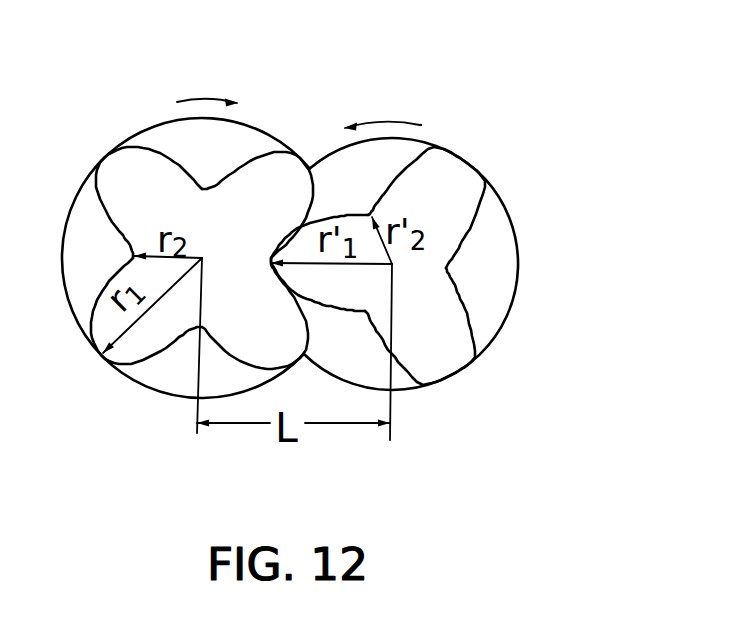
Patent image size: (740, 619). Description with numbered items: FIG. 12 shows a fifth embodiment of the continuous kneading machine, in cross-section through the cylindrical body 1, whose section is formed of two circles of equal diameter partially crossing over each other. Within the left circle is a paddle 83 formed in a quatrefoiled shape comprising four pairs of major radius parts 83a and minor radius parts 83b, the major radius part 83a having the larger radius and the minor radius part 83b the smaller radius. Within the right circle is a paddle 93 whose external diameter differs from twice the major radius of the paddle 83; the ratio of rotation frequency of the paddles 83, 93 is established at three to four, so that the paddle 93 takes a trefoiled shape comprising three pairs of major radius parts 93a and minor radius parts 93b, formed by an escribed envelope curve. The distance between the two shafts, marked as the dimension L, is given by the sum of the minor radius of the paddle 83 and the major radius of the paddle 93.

The cylindrical body 1 is at (288, 142).
The paddle 83 is at (186, 247).
The major radius part 83a is at (116, 164).
The minor radius part 83b is at (193, 318).
The paddle 93 is at (429, 234).
The major radius part 93a is at (461, 178).
The minor radius part 93b is at (444, 270).